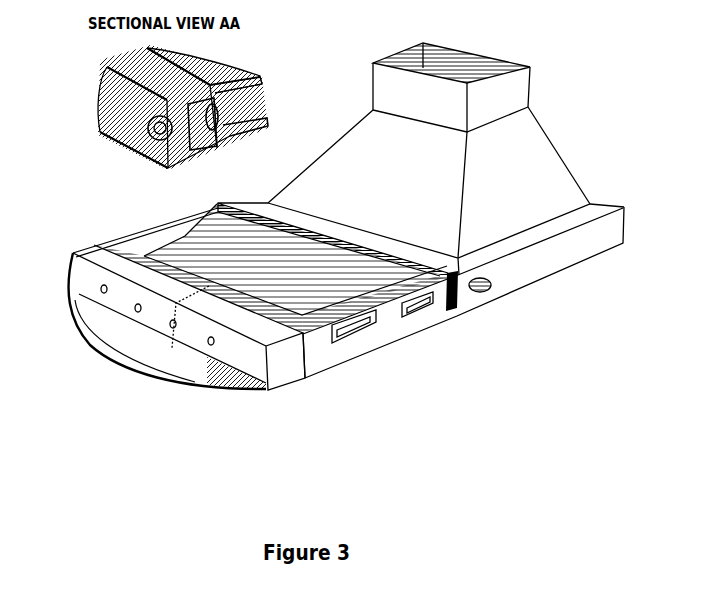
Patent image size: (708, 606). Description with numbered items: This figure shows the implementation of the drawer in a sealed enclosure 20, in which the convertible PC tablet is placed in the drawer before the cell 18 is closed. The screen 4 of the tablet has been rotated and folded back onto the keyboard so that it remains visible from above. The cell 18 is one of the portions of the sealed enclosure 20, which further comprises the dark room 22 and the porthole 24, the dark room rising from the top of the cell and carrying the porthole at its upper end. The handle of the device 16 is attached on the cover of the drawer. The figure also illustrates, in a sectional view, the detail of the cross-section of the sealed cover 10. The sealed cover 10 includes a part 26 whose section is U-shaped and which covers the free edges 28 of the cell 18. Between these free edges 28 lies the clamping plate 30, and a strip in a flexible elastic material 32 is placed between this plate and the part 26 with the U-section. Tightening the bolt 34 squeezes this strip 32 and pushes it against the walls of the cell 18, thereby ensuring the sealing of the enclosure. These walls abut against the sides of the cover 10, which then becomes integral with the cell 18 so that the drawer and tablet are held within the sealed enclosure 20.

The cover 10 is at (163, 112).
The part with U-shaped section 26 is at (143, 70).
The free edges of the cell 28 is at (213, 73).
The clamping plate 30 is at (227, 133).
The strip in a flexible elastic material 32 is at (202, 150).
The bolt 34 is at (128, 313).
The screen 4 is at (195, 246).
The cell 18 is at (187, 367).
The handle of the device 16 is at (532, 265).
The sealed enclosure 20 is at (446, 150).
The dark room 22 is at (347, 170).
The porthole 24 is at (390, 96).